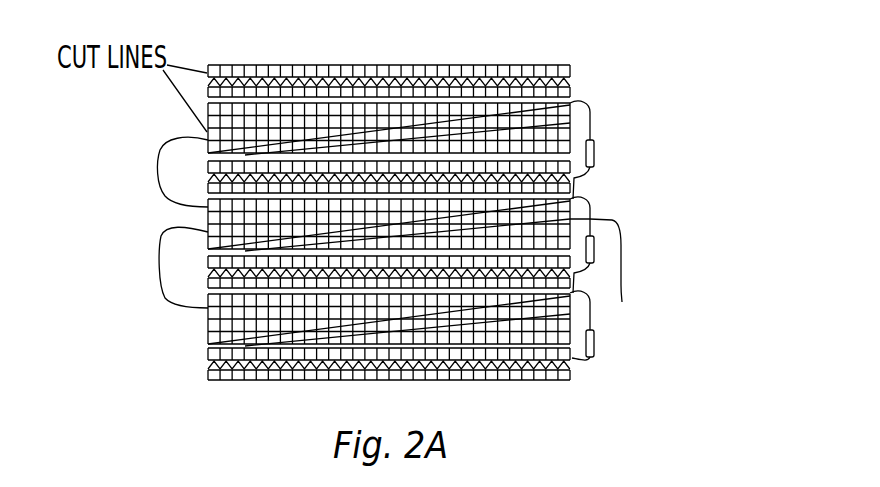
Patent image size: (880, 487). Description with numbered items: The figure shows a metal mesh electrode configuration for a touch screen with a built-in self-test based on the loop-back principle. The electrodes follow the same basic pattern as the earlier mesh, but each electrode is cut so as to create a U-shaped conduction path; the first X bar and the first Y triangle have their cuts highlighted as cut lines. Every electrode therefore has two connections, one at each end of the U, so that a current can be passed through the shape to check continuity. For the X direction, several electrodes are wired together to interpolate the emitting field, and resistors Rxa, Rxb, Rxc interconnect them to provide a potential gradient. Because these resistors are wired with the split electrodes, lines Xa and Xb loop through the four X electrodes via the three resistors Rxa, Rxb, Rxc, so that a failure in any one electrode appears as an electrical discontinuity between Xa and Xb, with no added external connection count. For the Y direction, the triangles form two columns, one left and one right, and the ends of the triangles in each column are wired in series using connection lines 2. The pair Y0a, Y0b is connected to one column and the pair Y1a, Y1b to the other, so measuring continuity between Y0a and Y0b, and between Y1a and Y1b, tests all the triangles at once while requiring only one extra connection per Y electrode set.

The X line Xa is at (570, 66).
The X line Xb is at (572, 380).
The Y line end Y0a is at (207, 118).
The Y line end Y0b is at (207, 323).
The Y line end Y1a is at (570, 123).
The Y line end Y1b is at (570, 313).
The resistor Rxa is at (604, 150).
The resistor Rxb is at (602, 245).
The resistor Rxc is at (604, 328).
The connection lines 2 is at (159, 257).